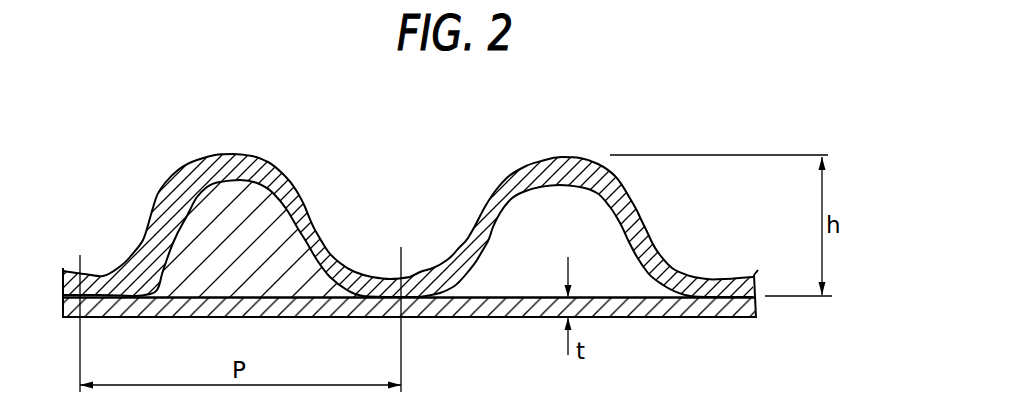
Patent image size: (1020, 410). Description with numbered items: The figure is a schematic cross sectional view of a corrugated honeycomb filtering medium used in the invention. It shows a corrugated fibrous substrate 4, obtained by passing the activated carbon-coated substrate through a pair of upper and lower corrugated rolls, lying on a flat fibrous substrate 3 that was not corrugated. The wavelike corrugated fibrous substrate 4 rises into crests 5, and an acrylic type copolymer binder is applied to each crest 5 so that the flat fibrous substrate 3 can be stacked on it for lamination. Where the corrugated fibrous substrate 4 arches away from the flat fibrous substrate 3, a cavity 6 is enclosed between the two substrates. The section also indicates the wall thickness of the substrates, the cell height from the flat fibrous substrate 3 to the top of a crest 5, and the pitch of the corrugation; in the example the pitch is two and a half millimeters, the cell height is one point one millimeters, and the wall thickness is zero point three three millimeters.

The flat fibrous substrate 3 is at (475, 318).
The corrugated fibrous substrate 4 is at (657, 273).
The crest 5 is at (578, 156).
The cavity 6 is at (516, 238).